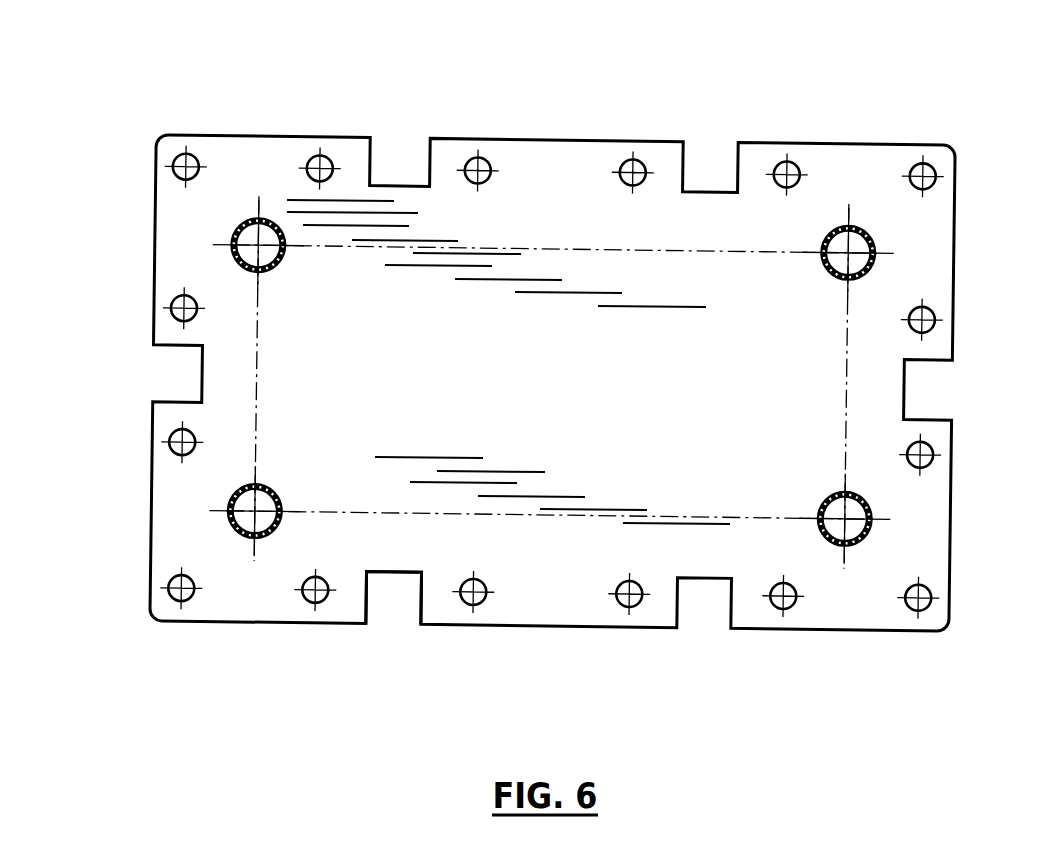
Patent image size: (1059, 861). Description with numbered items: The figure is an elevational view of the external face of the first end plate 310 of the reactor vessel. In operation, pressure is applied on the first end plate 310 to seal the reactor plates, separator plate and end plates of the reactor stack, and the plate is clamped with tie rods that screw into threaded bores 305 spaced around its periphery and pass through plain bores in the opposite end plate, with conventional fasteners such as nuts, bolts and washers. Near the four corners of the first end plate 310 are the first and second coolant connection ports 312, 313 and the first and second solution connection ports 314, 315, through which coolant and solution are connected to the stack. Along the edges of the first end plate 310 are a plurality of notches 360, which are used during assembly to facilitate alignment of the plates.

The first end plate 310 is at (555, 141).
The threaded bore 305 is at (917, 613).
The first coolant connection port 312 is at (870, 531).
The second coolant connection port 313 is at (230, 258).
The first solution connection port 314 is at (228, 512).
The second solution connection port 315 is at (862, 226).
The notch 360 is at (388, 593).